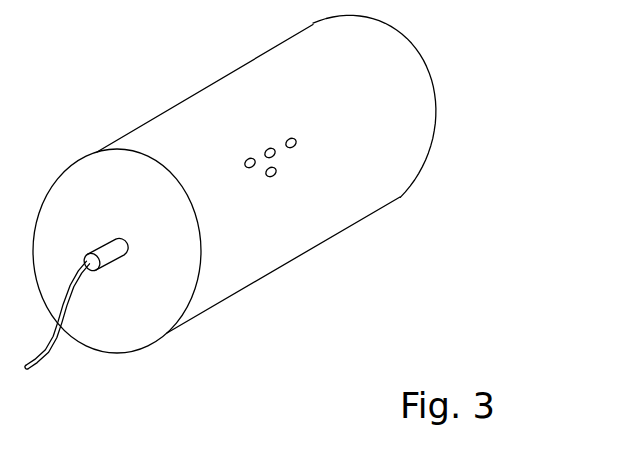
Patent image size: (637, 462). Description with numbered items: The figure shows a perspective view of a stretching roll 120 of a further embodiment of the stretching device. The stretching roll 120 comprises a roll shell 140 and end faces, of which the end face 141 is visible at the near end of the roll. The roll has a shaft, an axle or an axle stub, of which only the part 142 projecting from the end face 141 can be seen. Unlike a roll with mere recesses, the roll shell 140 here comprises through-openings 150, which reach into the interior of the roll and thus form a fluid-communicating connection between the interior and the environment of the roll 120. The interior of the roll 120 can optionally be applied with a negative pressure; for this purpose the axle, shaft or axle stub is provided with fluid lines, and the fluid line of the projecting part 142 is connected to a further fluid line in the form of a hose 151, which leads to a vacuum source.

The stretching roll 120 is at (446, 232).
The roll shell 140 is at (398, 110).
The end face 141 is at (170, 257).
The projecting part of shaft, axle or axle stub 142 is at (113, 266).
The through-openings 150 is at (253, 168).
The hose 151 is at (57, 352).